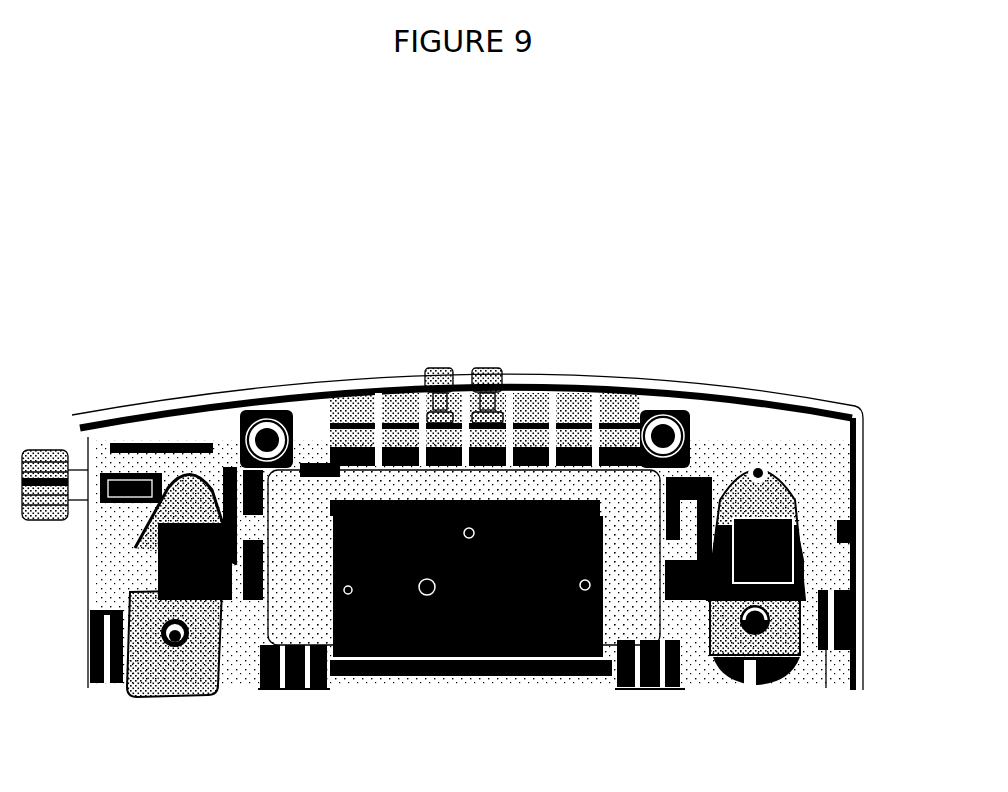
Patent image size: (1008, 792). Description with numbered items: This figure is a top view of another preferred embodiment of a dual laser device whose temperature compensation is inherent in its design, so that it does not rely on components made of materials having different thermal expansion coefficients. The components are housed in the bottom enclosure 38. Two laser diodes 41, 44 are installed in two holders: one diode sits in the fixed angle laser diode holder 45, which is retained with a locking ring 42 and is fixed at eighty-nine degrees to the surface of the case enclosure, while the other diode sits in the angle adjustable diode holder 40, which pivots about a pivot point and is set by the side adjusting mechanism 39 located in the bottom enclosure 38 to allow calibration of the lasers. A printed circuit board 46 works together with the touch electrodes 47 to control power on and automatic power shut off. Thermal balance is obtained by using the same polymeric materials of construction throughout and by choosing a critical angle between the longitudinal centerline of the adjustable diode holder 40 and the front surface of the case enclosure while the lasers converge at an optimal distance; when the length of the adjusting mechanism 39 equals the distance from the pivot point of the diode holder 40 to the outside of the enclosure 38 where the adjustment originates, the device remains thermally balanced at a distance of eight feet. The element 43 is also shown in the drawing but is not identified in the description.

The bottom enclosure 38 is at (232, 432).
The side adjusting mechanism 39 is at (47, 437).
The angle adjustable diode holder 40 is at (192, 492).
The laser diode 41 is at (160, 555).
The locking ring 42 is at (747, 665).
The side clip 43 is at (826, 620).
The laser diode 44 is at (797, 523).
The fixed angle laser diode holder 45 is at (787, 480).
The printed circuit board 46 is at (474, 620).
The touch electrodes 47 is at (492, 362).